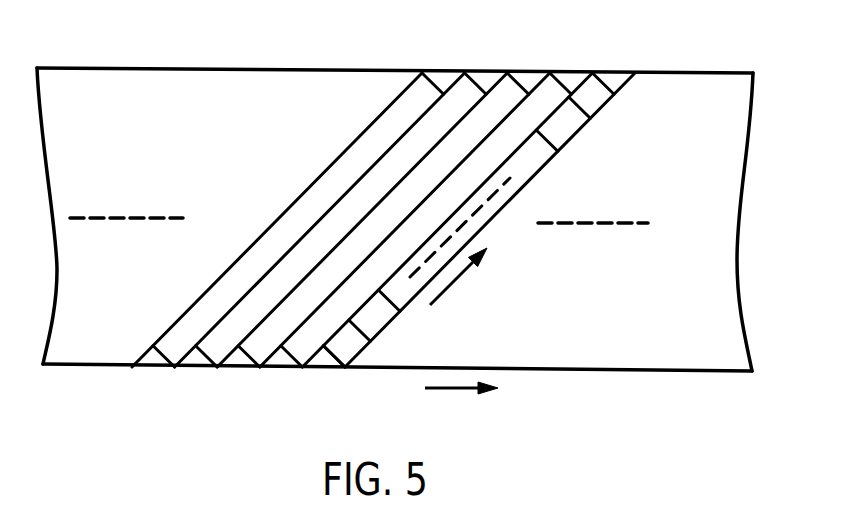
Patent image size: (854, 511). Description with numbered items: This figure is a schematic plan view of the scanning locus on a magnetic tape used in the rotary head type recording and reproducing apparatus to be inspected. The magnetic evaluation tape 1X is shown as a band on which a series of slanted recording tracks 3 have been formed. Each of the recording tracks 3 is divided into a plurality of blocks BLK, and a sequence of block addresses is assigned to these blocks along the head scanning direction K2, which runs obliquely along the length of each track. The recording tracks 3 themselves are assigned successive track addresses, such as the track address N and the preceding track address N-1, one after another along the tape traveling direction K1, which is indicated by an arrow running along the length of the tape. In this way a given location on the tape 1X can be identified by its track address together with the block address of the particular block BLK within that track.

The recording tracks 3 is at (517, 73).
The magnetic evaluation tape 1X is at (575, 73).
The blocks BLK is at (570, 145).
The head scanning direction K2 is at (445, 290).
The tape traveling direction K1 is at (453, 390).
The track address n N is at (281, 367).
The track address n−1 N-1 is at (326, 367).